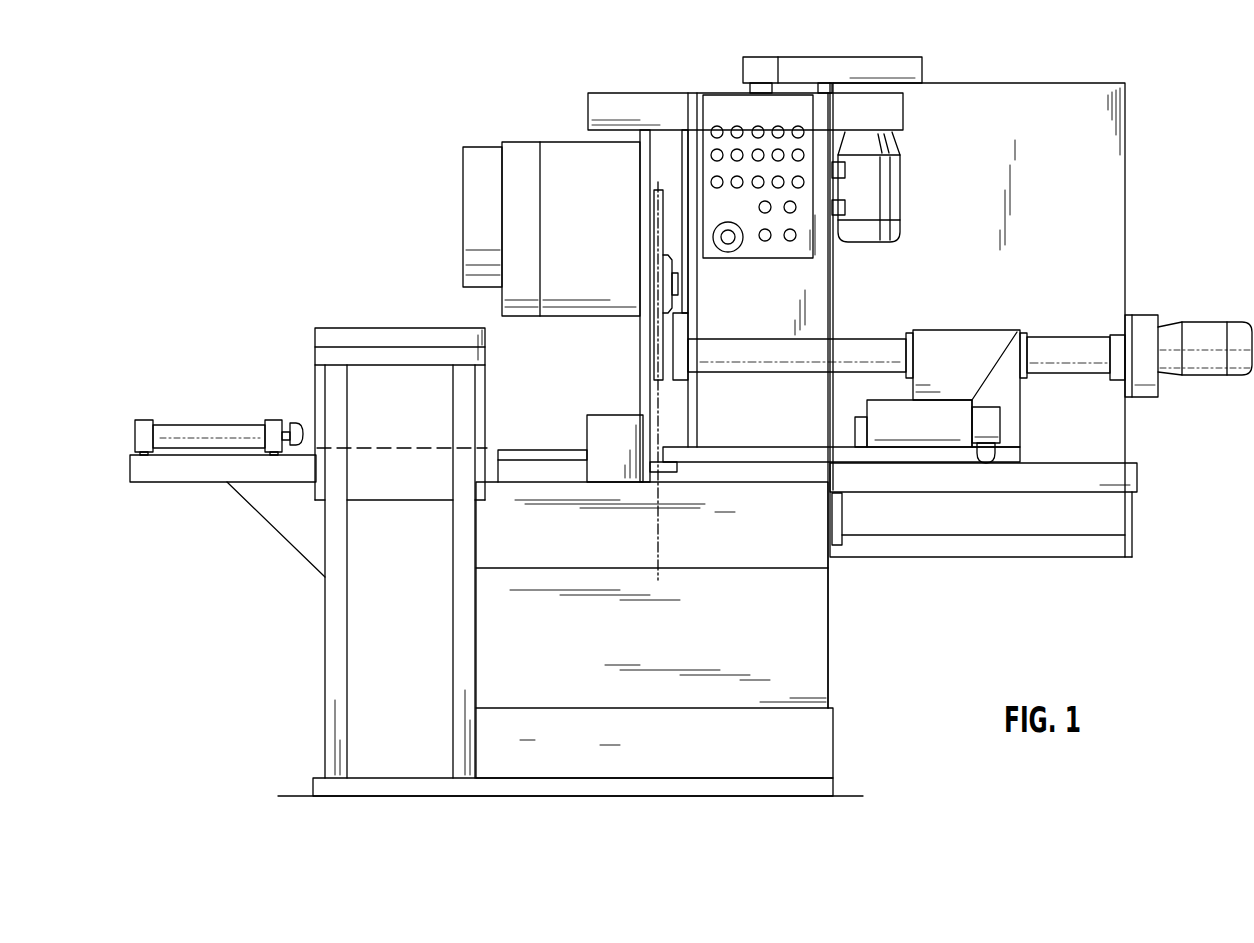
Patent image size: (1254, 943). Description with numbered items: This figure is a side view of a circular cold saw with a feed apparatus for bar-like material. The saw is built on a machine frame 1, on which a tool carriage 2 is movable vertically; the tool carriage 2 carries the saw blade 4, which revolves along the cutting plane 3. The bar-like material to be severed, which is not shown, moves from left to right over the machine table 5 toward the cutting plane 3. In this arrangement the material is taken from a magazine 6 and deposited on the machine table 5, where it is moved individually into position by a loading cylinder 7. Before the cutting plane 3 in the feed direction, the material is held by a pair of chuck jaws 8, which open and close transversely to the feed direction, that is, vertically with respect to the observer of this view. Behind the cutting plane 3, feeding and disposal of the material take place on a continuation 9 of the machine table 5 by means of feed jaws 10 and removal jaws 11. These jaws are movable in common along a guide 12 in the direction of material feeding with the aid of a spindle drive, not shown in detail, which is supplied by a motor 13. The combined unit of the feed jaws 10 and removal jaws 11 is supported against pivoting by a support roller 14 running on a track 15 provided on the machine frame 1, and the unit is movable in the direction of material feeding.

The machine frame 1 is at (818, 641).
The tool carriage 2 is at (565, 160).
The cutting plane 3 is at (660, 530).
The saw blade 4 is at (655, 352).
The machine table 5 is at (540, 450).
The magazine 6 is at (358, 390).
The loading cylinder 7 is at (218, 433).
The chuck jaws 8 is at (610, 420).
The continuation of the machine table 9 is at (890, 462).
The feed jaws 10 is at (957, 415).
The removal jaws 11 is at (992, 340).
The guide 12 is at (1082, 347).
The motor 13 is at (1202, 332).
The support roller 14 is at (986, 464).
The track 15 is at (1100, 470).